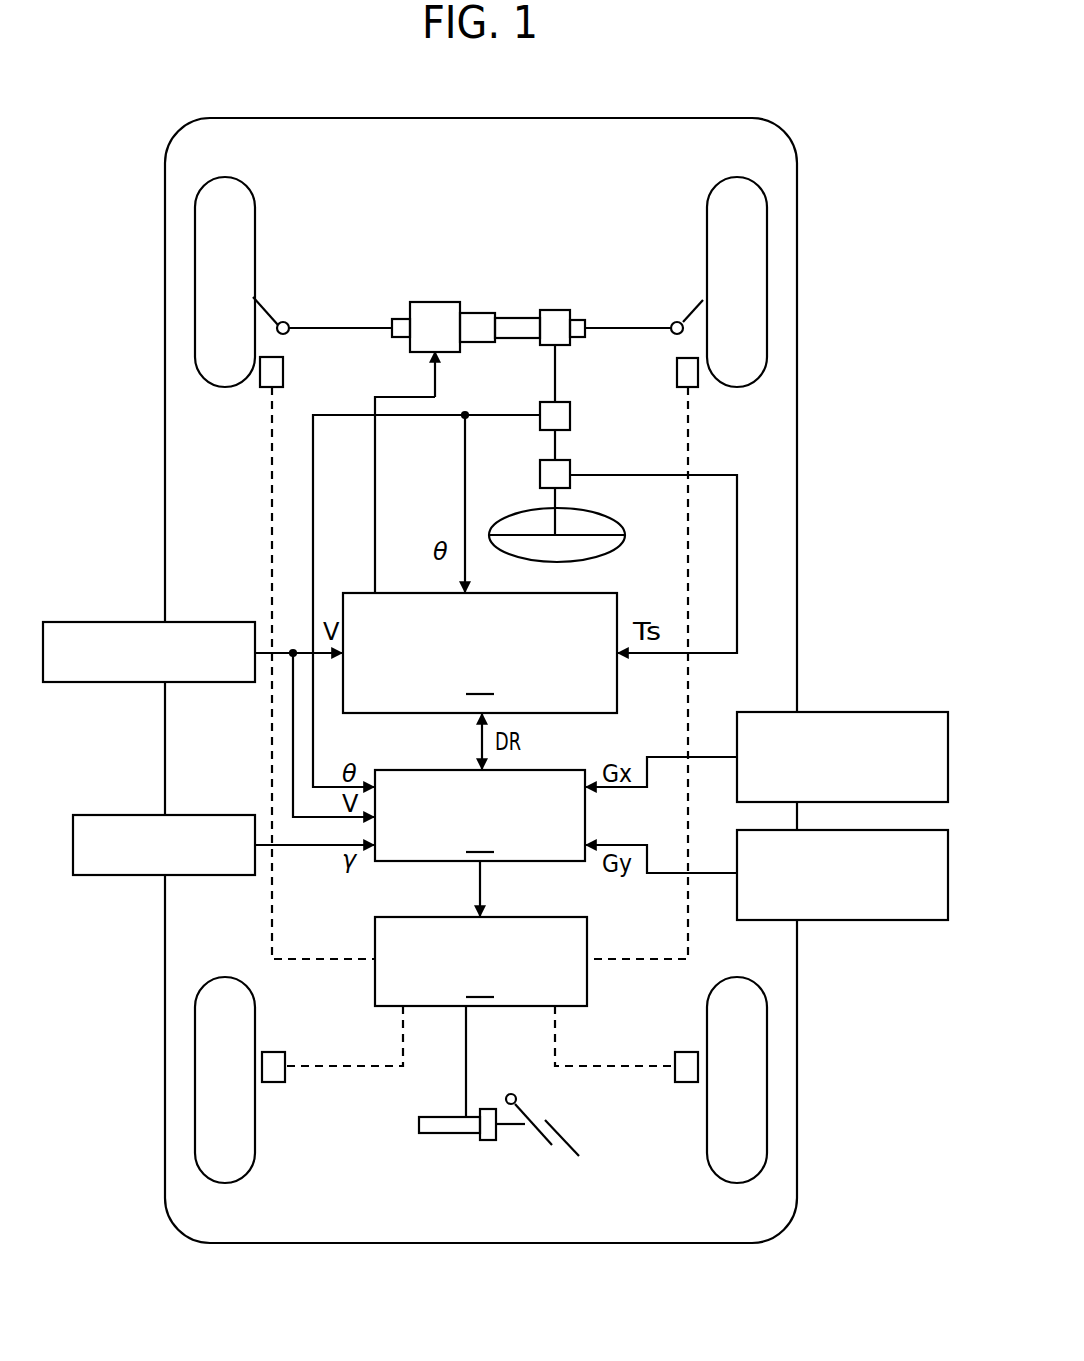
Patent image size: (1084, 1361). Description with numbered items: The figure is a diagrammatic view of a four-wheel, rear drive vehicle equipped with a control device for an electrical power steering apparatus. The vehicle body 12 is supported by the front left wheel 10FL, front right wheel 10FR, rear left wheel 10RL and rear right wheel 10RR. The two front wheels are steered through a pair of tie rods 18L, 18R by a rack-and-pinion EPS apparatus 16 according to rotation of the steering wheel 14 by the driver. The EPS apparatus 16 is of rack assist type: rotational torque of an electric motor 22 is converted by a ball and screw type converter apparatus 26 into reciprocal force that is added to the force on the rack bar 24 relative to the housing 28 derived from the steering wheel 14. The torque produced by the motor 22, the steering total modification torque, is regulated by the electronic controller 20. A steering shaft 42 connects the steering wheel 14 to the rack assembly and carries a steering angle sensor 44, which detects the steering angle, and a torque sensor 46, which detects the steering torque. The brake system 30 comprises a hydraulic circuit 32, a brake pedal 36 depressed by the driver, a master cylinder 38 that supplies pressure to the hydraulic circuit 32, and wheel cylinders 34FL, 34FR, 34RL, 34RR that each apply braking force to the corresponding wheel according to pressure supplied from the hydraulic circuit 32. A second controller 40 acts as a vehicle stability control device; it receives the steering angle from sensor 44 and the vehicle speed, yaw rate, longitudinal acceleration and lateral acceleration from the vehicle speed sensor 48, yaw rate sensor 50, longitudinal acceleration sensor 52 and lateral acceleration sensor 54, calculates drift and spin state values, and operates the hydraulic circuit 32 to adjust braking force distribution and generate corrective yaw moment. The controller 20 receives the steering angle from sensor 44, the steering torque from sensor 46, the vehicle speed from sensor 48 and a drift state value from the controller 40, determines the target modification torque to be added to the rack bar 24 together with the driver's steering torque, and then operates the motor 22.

The front left wheel 10FL is at (195, 298).
The front right wheel 10FR is at (767, 298).
The rear left wheel 10RL is at (195, 1088).
The rear right wheel 10RR is at (767, 1088).
The vehicle body 12 is at (797, 565).
The steering wheel 14 is at (605, 517).
The EPS apparatus 16 is at (405, 280).
The tie rod 18L is at (269, 313).
The tie rod 18R is at (688, 310).
The electronic controller 20 is at (480, 653).
The electric motor 22 is at (437, 302).
The rack bar 24 is at (320, 330).
The ball and screw type converter apparatus 26 is at (483, 343).
The housing 28 is at (518, 318).
The brake system 30 is at (396, 1114).
The hydraulic circuit 32 is at (481, 961).
The wheel cylinder 34FL is at (285, 373).
The wheel cylinder 34FR is at (677, 373).
The wheel cylinder 34RL is at (273, 1052).
The wheel cylinder 34RR is at (686, 1052).
The brake pedal 36 is at (570, 1143).
The master cylinder 38 is at (440, 1133).
The controller 40 is at (480, 815).
The steering shaft 42 is at (558, 364).
The steering angle sensor 44 is at (572, 418).
The torque sensor 46 is at (540, 477).
The vehicle speed sensor 48 is at (198, 622).
The yaw rate sensor 50 is at (195, 875).
The longitudinal acceleration sensor 52 is at (870, 712).
The lateral acceleration sensor 54 is at (870, 920).